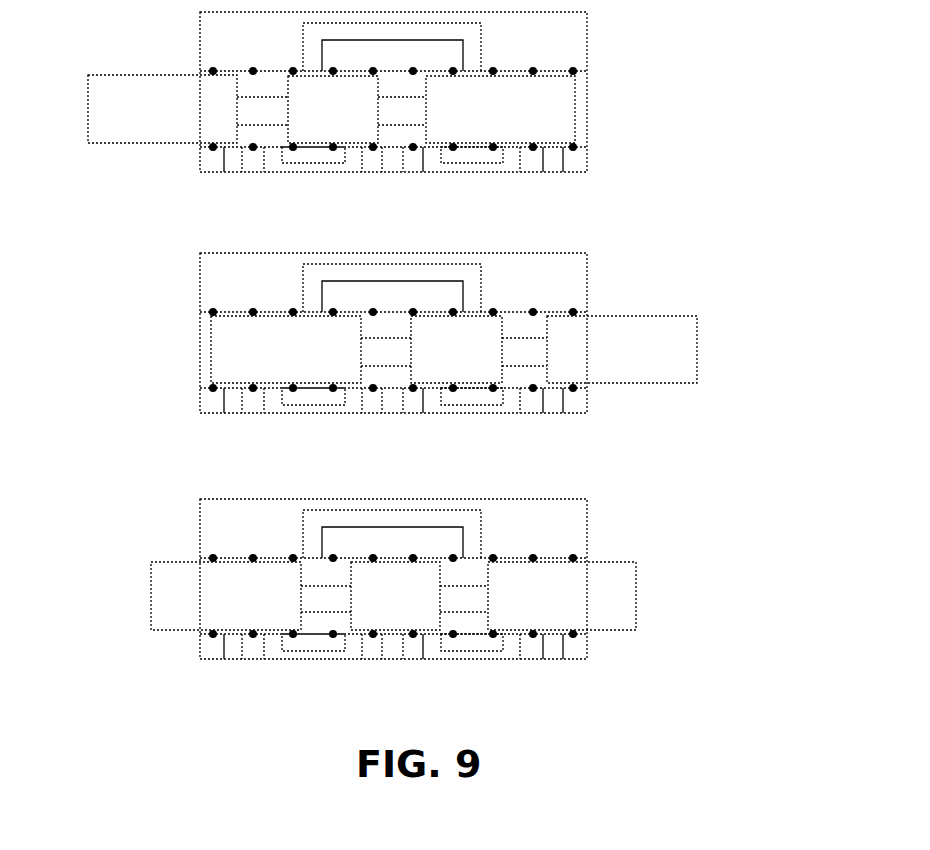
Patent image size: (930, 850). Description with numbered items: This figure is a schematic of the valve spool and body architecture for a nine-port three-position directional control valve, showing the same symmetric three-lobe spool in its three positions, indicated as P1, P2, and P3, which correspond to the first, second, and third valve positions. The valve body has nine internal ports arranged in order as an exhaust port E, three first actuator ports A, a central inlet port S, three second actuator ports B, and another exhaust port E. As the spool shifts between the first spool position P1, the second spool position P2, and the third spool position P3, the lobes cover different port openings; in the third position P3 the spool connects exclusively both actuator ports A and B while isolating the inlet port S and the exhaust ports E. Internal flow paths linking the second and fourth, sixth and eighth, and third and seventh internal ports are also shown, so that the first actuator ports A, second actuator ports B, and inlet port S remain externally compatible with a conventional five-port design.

The first spool position P1 is at (87, 109).
The second spool position P2 is at (210, 350).
The third spool position P3 is at (150, 596).
The first actuator port A is at (248, 188).
The second actuator port B is at (409, 188).
The inlet port S is at (379, 418).
The exhaust port E is at (393, 418).